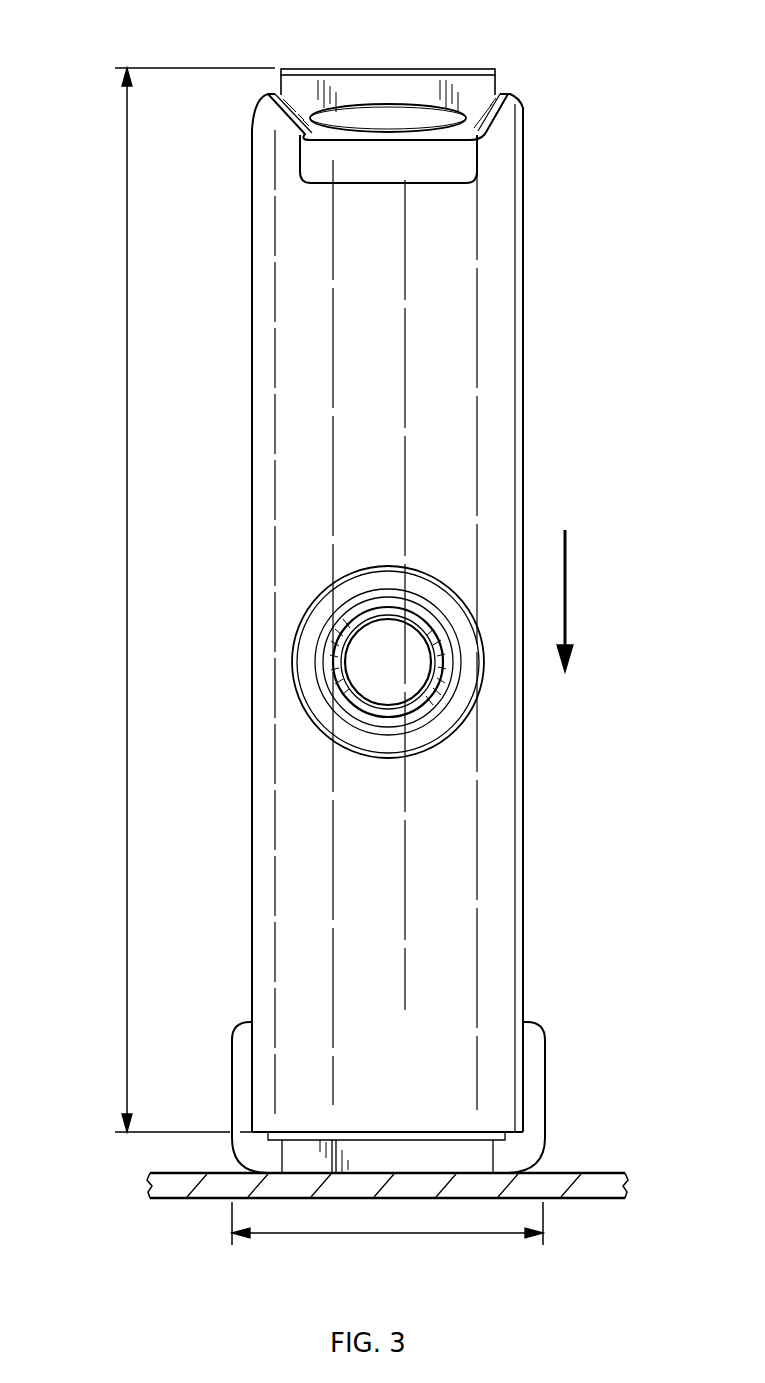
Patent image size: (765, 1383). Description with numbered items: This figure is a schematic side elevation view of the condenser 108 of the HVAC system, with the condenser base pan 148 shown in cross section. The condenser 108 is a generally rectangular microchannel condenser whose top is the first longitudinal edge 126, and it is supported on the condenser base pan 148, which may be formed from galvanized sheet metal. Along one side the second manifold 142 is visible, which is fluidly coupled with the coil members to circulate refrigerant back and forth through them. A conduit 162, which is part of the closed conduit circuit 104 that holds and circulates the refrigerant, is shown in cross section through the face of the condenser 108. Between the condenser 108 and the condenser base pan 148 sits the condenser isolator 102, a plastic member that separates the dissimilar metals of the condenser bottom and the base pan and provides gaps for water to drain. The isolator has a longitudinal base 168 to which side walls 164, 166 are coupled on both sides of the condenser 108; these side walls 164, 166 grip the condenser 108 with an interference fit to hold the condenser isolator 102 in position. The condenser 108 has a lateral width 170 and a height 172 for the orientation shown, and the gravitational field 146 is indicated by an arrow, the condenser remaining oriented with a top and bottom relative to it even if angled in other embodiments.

The condenser isolator 102 is at (545, 1052).
The closed conduit circuit 104 is at (445, 645).
The condenser 108 is at (252, 377).
The first longitudinal edge 126 is at (385, 68).
The second manifold 142 is at (505, 373).
The gravitational field 146 is at (566, 588).
The condenser base pan 148 is at (598, 1200).
The conduit 162 is at (357, 668).
The side wall 164 is at (232, 1090).
The side wall 166 is at (545, 1090).
The longitudinal base 168 is at (480, 1154).
The lateral width 170 is at (388, 1235).
The height 172 is at (127, 600).